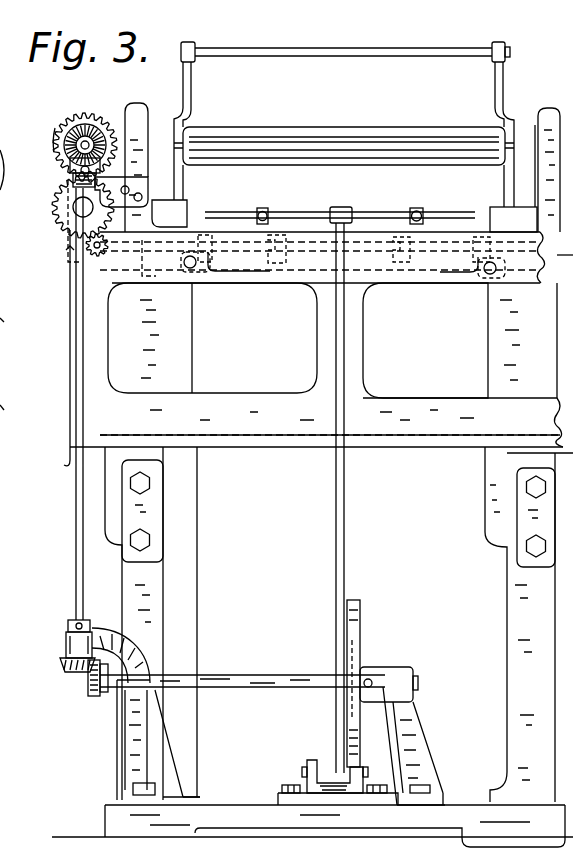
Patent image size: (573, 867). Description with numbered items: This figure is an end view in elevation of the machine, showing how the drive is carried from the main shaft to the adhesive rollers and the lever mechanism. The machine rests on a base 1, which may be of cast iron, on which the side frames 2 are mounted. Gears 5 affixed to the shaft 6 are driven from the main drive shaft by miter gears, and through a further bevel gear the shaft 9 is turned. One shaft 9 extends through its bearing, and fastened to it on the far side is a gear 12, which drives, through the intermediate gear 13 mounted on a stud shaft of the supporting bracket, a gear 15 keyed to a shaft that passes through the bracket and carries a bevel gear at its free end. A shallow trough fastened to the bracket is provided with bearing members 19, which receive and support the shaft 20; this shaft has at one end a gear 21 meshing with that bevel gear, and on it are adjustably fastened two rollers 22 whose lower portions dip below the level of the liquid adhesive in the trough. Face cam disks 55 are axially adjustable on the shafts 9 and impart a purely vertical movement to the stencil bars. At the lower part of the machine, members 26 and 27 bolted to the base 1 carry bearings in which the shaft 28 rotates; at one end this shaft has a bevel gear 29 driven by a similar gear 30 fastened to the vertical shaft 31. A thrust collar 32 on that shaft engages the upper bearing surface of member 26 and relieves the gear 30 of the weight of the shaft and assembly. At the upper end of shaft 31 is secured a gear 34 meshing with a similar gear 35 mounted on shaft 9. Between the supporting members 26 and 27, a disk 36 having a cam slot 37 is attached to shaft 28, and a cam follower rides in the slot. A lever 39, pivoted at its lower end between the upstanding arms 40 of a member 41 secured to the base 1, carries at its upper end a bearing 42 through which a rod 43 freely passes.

The base 1 is at (112, 822).
The side frames 2 is at (165, 628).
The gears 5 is at (0, 406).
The shaft 6 is at (0, 320).
The shaft 9 is at (100, 122).
The gear 12 is at (85, 116).
The intermediate gear 13 is at (62, 222).
The gear 15 is at (68, 249).
The bearing members 19 is at (200, 232).
The shaft 20 is at (140, 250).
The gear 21 is at (98, 260).
The rollers 22 is at (278, 263).
The member 26 is at (118, 745).
The member 27 is at (425, 745).
The shaft 28 is at (232, 688).
The bevel or miter gear 29 is at (90, 692).
The gear 30 is at (66, 669).
The shaft 31 is at (76, 575).
The thrust collar 32 is at (66, 628).
The gear 34 is at (66, 160).
The gear 35 is at (62, 126).
The disk 36 is at (358, 613).
The cam slot 37 is at (350, 660).
The lever 39 is at (345, 515).
The upstanding arms 40 is at (310, 758).
The member 41 is at (278, 800).
The bearing 42 is at (350, 211).
The rod 43 is at (387, 212).
The face cam disk 55 is at (11, 179).